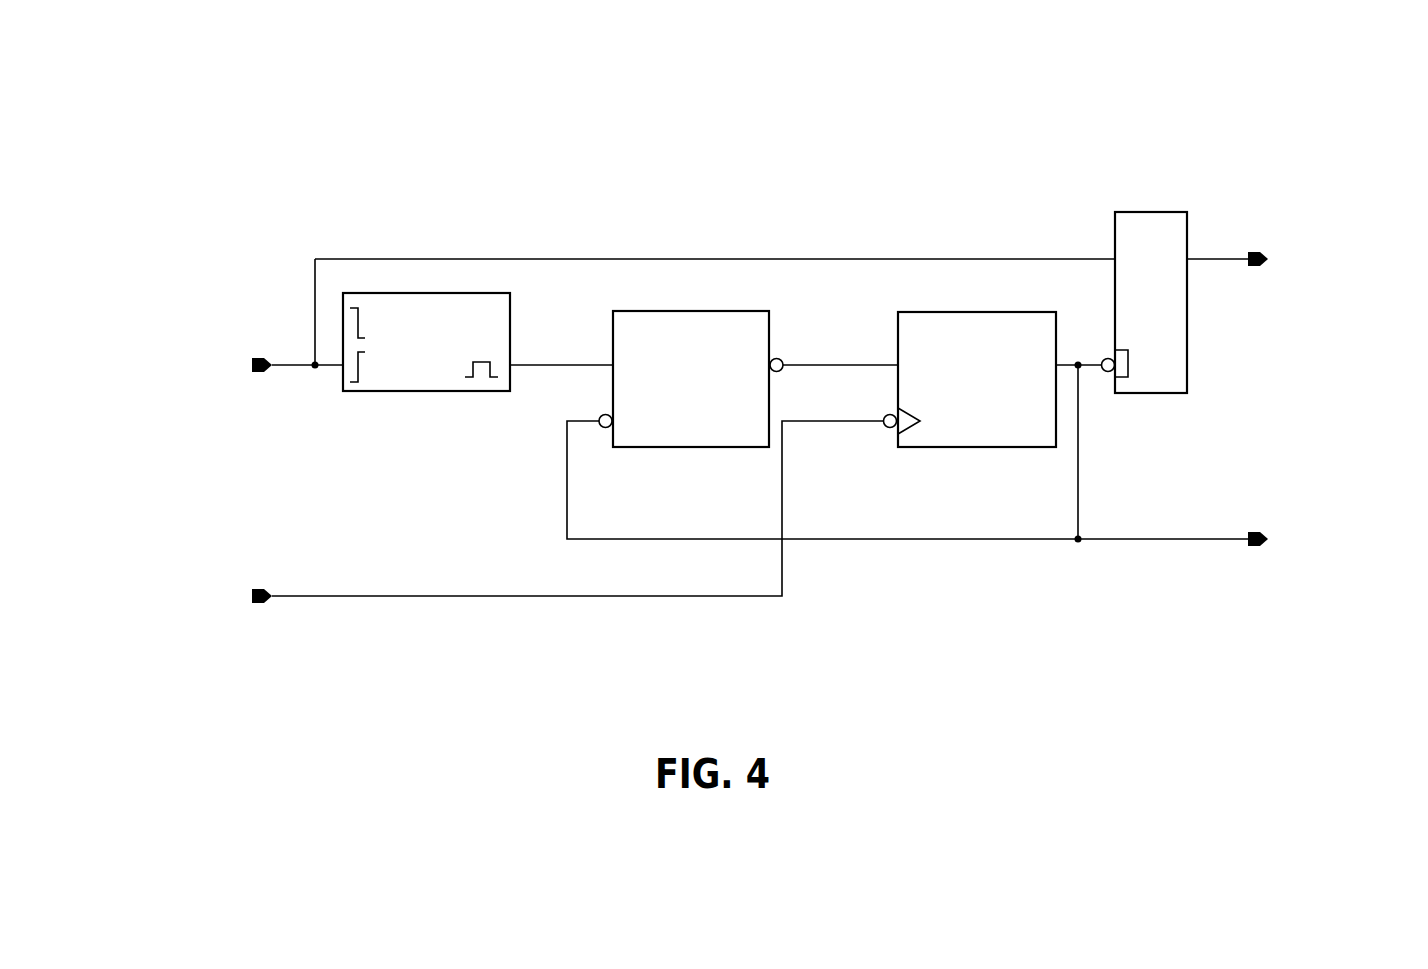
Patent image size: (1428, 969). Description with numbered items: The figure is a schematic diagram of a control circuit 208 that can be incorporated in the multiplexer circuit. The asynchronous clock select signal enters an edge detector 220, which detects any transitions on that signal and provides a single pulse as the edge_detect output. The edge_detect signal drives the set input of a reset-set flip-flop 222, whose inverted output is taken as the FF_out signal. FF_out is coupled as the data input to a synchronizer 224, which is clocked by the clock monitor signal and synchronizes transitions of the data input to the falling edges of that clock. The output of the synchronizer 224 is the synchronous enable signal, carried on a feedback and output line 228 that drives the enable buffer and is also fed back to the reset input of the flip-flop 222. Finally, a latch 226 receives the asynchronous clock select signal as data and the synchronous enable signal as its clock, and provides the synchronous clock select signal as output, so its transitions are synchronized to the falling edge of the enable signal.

The control circuit 208 is at (1070, 96).
The edge detector 220 is at (408, 392).
The reset-set flip-flop 222 is at (698, 450).
The synchronizer 224 is at (962, 449).
The latch 226 is at (1160, 395).
The synchronous enable signal line 228 is at (873, 541).